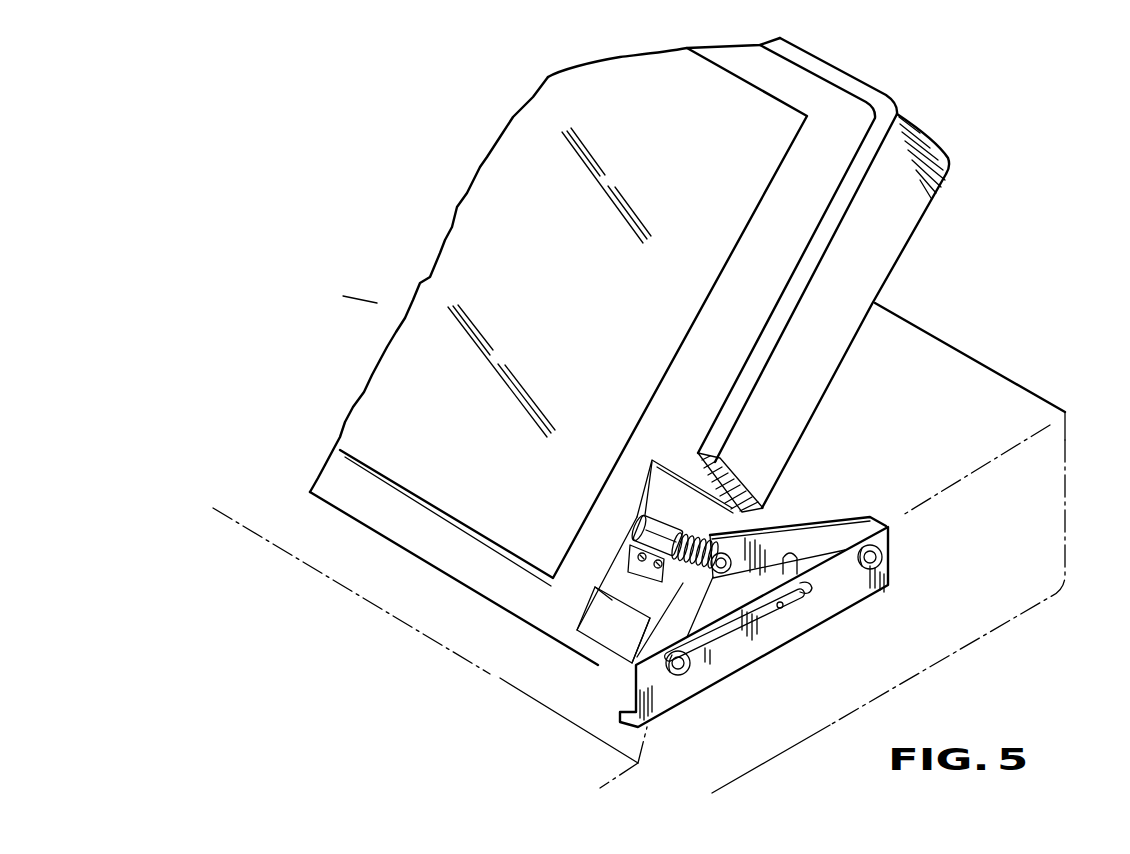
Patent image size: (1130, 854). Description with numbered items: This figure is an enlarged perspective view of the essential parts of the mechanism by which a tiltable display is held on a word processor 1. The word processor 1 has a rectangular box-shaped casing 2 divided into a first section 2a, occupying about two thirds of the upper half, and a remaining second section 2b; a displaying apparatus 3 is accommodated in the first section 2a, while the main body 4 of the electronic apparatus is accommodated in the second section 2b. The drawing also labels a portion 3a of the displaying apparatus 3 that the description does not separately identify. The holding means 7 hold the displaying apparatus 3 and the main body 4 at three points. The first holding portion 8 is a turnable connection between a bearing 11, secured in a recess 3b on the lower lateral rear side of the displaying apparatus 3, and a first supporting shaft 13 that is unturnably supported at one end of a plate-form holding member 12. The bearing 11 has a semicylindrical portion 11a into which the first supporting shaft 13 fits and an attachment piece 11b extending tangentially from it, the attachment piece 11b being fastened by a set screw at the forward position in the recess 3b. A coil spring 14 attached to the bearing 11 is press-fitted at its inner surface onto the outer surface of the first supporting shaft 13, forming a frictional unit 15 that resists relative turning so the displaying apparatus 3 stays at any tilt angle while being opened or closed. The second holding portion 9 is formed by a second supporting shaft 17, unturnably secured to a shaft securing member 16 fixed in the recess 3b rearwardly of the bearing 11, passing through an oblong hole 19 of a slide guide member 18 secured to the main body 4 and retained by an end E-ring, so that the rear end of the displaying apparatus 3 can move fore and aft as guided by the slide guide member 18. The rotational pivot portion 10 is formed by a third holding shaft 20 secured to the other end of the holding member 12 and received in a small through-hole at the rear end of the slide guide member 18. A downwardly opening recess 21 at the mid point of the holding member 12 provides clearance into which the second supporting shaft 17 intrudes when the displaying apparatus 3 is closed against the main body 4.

The word processor 1 is at (1010, 283).
The casing 2 is at (1093, 340).
The first section 2a is at (855, 325).
The second section 2b is at (1035, 393).
The displaying apparatus 3 is at (903, 233).
The front panel of frame 3a is at (751, 219).
The recess 3b is at (668, 502).
The main body 4 is at (1066, 496).
The holding means 7 is at (588, 401).
The first holding portion 8 is at (647, 518).
The second holding portion 9 is at (616, 657).
The rotational pivot portion 10 is at (885, 553).
The bearing 11 is at (647, 523).
The semicylindrical portion 11a is at (670, 530).
The attachment piece 11b is at (637, 557).
The holding member 12 is at (835, 532).
The first supporting shaft 13 is at (722, 550).
The coil spring 14 is at (733, 508).
The frictional unit 15 is at (816, 440).
The shaft securing member 16 is at (610, 645).
The second supporting shaft 17 is at (683, 670).
The slide guide member 18 is at (741, 656).
The oblong hole 19 is at (783, 606).
The third holding shaft 20 is at (883, 584).
The downwardly opening recess 21 is at (808, 591).